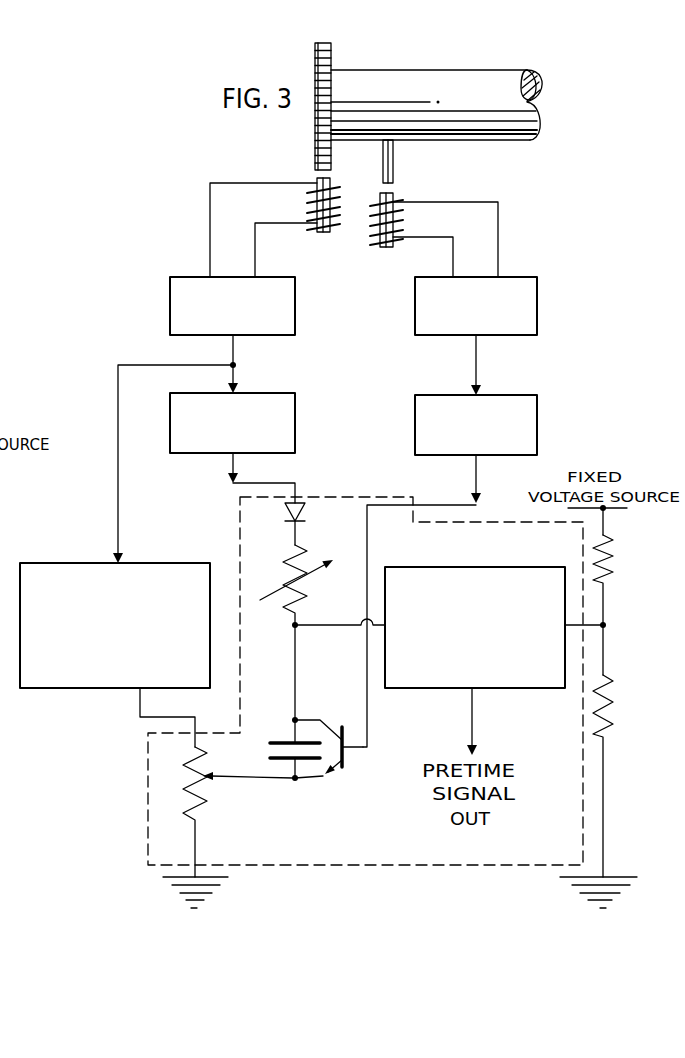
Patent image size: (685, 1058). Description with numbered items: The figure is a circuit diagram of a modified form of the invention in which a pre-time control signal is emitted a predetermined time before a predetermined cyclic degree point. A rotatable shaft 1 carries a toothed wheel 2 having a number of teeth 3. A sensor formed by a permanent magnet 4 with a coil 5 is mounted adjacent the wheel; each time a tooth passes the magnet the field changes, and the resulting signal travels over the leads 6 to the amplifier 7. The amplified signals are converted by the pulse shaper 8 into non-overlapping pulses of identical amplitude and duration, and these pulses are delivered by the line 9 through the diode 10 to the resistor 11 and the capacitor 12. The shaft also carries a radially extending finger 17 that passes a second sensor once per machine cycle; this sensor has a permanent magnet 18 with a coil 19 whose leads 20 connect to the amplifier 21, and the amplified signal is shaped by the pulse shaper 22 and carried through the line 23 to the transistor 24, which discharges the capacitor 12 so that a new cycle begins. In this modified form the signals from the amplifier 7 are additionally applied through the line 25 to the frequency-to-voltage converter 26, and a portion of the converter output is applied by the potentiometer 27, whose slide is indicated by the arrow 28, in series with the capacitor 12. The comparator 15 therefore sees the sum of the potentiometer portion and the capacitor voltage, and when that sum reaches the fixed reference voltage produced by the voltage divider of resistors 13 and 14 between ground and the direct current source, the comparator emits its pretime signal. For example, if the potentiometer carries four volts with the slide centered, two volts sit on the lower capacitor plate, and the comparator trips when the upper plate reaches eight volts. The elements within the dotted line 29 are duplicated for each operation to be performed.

The rotatable shaft 1 is at (478, 80).
The toothed wheel 2 is at (333, 56).
The teeth 3 is at (316, 92).
The permanent magnet 4 is at (323, 232).
The coil 5 is at (331, 183).
The leads 6 is at (255, 243).
The amplifier 7 is at (170, 302).
The pulse shaper 8 is at (292, 400).
The line 9 is at (262, 487).
The diode 10 is at (276, 511).
The resistor 11 is at (283, 567).
The capacitor 12 is at (271, 730).
The resistor 13 is at (612, 560).
The resistor 14 is at (608, 706).
The comparator 15 is at (490, 566).
The radially extending finger 17 is at (394, 160).
The permanent magnet 18 is at (386, 247).
The coil 19 is at (395, 223).
The leads 20 is at (455, 265).
The amplifier 21 is at (530, 301).
The pulse shaper 22 is at (532, 405).
The line 23 is at (366, 521).
The transistor 24 is at (360, 772).
The line 25 is at (118, 489).
The frequency-to-voltage converter 26 is at (80, 563).
The potentiometer 27 is at (185, 773).
The slide 28 is at (236, 791).
The dotted line 29 is at (148, 740).